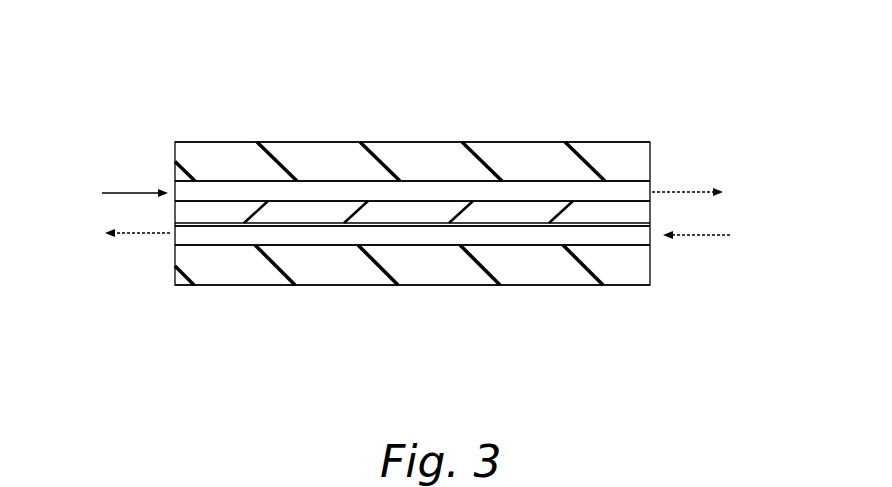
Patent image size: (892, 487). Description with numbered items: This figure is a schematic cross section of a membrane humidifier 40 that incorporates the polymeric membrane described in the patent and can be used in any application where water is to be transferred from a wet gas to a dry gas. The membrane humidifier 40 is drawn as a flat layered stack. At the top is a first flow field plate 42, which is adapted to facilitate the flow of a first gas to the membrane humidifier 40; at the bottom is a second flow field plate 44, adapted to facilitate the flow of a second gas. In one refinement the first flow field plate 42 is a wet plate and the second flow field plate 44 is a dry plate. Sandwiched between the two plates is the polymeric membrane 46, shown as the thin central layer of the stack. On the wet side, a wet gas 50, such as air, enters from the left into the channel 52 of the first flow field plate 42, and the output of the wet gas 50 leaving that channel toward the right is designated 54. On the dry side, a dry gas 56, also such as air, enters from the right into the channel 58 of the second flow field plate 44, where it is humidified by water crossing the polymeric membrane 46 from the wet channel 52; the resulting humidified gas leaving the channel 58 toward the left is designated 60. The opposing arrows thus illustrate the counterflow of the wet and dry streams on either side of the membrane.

The membrane humidifier 40 is at (664, 74).
The first flow field plate 42 is at (210, 141).
The second flow field plate 44 is at (173, 284).
The polymeric membrane 46 is at (650, 209).
The wet gas 50 is at (130, 192).
The channel 52 is at (342, 190).
The output of wet gas 54 is at (690, 187).
The dry gas 56 is at (705, 237).
The channel 58 is at (397, 237).
The humidified gas 60 is at (128, 236).